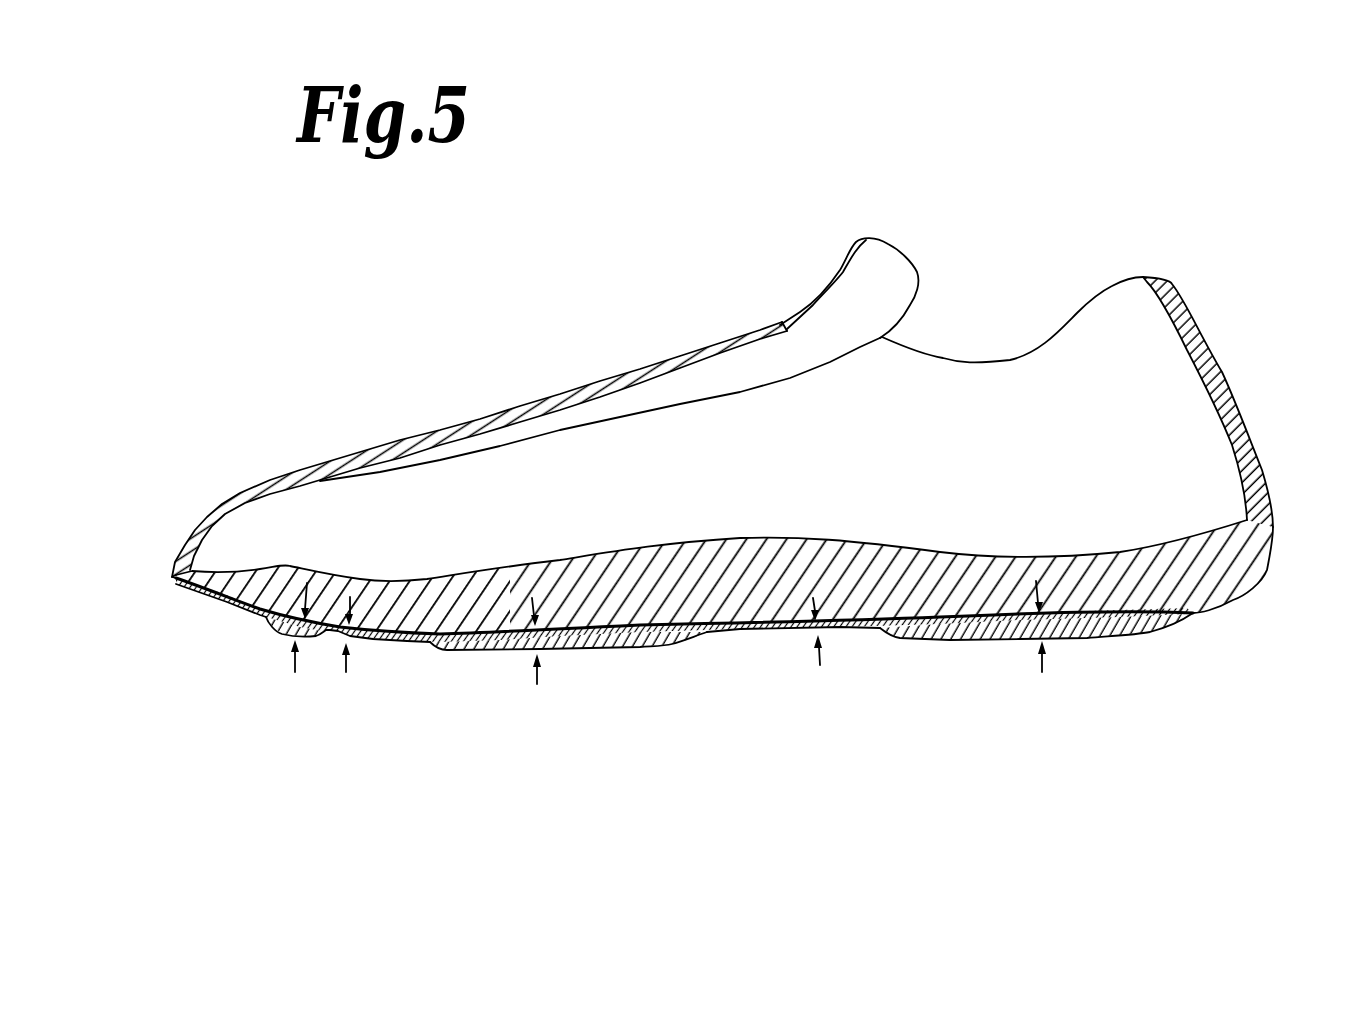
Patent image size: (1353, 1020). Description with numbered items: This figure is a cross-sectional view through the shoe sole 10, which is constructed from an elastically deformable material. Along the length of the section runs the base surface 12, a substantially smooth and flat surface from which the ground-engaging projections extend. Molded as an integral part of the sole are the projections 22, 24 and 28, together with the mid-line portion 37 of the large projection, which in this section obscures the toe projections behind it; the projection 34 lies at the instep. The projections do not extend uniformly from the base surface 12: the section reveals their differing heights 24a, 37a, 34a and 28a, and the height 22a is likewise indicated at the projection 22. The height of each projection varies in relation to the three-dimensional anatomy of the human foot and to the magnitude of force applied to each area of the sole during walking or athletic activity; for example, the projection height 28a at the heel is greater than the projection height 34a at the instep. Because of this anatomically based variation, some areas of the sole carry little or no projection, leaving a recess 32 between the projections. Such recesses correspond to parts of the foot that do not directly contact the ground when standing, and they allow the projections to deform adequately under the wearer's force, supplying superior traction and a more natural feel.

The shoe sole 10 is at (178, 635).
The base surface 12 is at (1192, 618).
The projection 22 is at (357, 637).
The projection 24 is at (280, 637).
The recess 32 is at (373, 643).
The mid-line portion 37 is at (503, 650).
The projection at the instep 34 is at (780, 633).
The projection 28 is at (1083, 640).
The projection height 24a is at (287, 643).
The thickness of outsole 22a is at (348, 650).
The projection height 37a is at (548, 658).
The projection height 34a is at (832, 648).
The projection height 28a is at (1037, 643).